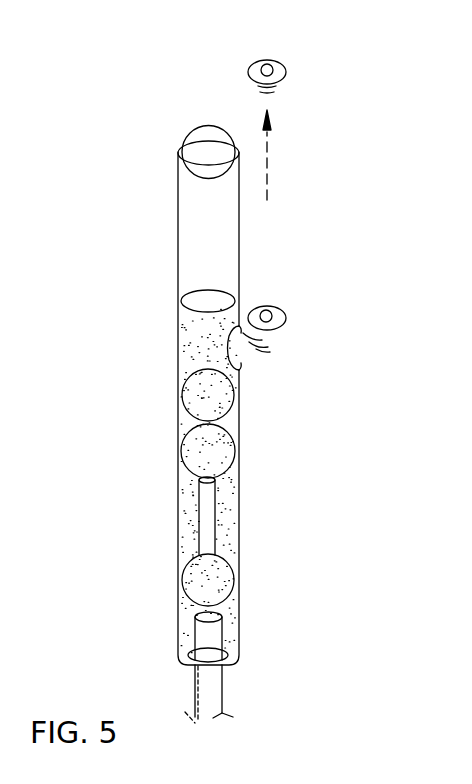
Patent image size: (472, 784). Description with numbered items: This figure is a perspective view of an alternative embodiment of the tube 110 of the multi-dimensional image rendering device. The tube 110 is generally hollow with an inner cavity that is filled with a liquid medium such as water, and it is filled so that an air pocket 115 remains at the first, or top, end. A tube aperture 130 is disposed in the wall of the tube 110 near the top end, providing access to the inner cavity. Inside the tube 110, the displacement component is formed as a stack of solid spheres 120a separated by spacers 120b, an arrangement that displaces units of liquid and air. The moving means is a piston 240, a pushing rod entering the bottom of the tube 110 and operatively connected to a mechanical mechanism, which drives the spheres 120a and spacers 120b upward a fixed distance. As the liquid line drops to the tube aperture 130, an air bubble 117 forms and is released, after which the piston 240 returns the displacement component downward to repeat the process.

The tube 110 is at (178, 340).
The air pocket 115 is at (188, 255).
The air bubble 117 is at (279, 60).
The tube aperture 130 is at (237, 348).
The spheres 120a is at (182, 447).
The spacers 120b is at (199, 509).
The piston 240 is at (195, 638).